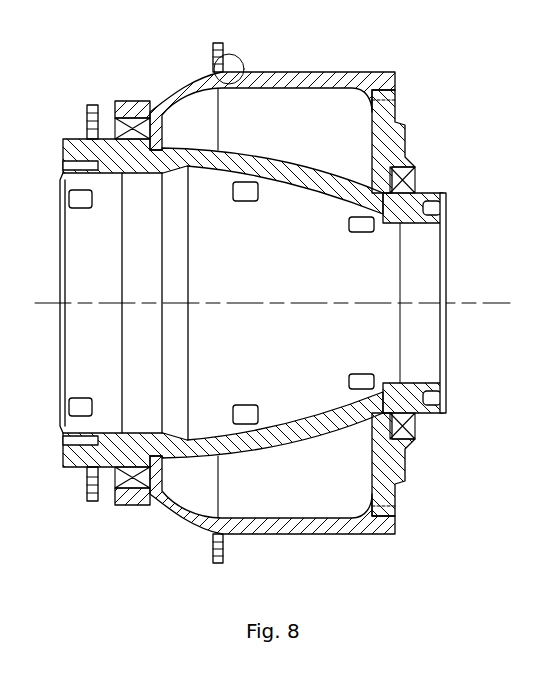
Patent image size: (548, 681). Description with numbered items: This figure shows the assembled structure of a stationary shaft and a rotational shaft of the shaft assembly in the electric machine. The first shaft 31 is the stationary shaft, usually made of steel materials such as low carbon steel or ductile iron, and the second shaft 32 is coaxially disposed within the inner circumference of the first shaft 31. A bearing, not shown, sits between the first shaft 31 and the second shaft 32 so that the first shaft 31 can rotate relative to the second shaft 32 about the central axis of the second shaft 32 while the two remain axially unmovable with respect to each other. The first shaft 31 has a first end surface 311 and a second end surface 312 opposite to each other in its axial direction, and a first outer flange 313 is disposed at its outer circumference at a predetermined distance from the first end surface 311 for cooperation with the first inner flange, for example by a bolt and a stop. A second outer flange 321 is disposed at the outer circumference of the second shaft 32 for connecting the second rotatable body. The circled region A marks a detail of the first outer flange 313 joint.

The first shaft 31 is at (332, 72).
The first end surface 311 is at (399, 72).
The second end surface 312 is at (112, 100).
The first outer flange 313 is at (217, 43).
The second outer flange 321 is at (88, 107).
The second shaft 32 is at (418, 193).
The detail region A is at (238, 57).